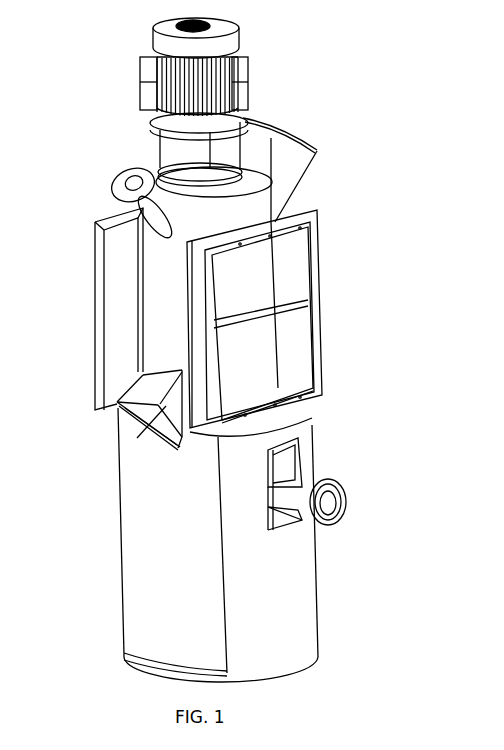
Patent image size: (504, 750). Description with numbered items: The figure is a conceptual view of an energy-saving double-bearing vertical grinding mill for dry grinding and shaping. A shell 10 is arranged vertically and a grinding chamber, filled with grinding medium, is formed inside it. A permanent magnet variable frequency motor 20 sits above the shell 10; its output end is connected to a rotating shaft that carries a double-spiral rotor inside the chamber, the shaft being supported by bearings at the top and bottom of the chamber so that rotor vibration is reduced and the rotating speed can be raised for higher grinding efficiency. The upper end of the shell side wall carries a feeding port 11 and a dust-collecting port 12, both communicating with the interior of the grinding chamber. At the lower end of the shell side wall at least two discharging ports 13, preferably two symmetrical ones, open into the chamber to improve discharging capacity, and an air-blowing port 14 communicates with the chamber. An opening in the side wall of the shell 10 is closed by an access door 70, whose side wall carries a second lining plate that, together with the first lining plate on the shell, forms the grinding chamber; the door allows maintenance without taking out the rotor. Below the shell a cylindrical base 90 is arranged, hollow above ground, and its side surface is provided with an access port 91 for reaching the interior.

The permanent magnet variable frequency motor 20 is at (190, 55).
The feeding port 11 is at (285, 167).
The dust-collecting port 12 is at (112, 204).
The shell 10 is at (160, 302).
The access door 70 is at (288, 288).
The discharging port 13 is at (152, 390).
The base 90 is at (160, 540).
The access port 91 is at (302, 462).
The air-blowing port 14 is at (346, 495).